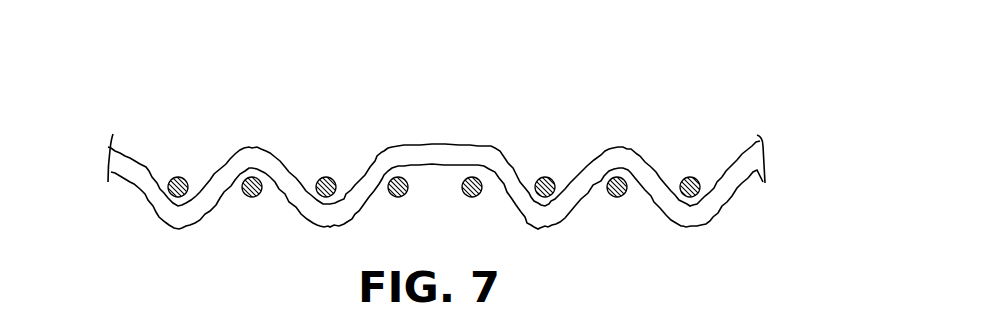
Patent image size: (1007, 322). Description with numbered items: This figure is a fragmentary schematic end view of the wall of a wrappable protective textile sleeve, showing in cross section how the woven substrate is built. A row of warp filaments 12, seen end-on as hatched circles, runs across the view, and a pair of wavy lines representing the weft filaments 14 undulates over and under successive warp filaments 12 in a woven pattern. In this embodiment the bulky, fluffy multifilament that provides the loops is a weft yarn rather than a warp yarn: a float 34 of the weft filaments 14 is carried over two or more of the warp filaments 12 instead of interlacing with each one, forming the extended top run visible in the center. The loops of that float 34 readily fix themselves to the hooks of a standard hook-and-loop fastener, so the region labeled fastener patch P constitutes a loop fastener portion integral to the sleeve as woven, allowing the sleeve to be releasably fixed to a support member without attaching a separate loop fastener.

The warp filaments 12 is at (178, 176).
The float 34 is at (435, 143).
The weft filaments 14 is at (633, 150).
The fastener patch P is at (482, 128).